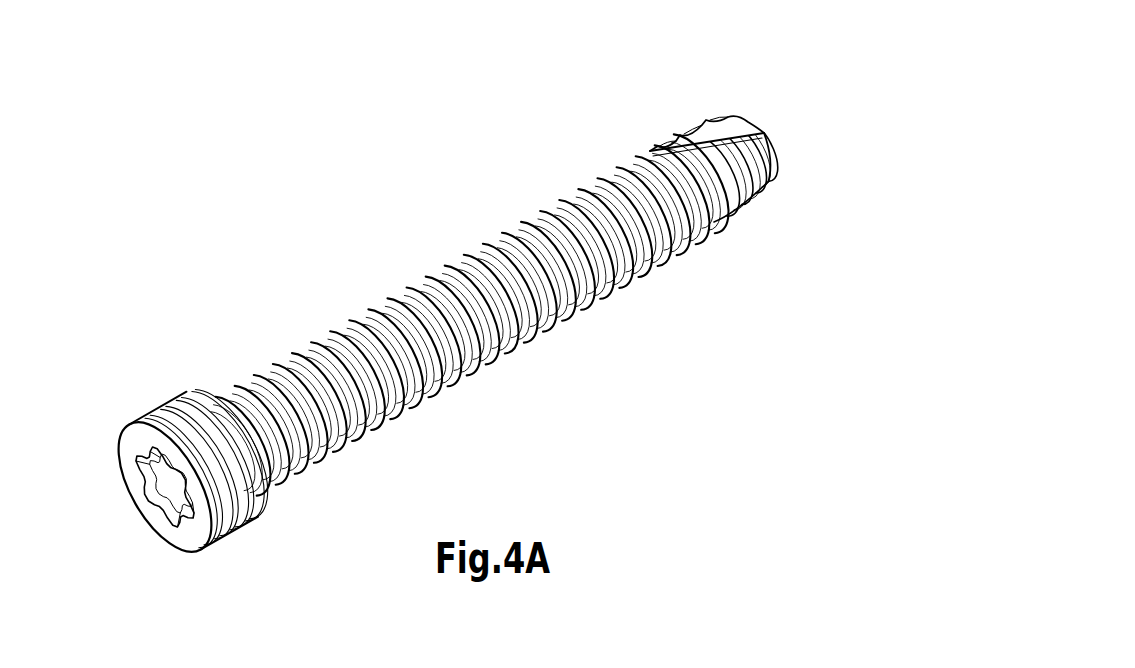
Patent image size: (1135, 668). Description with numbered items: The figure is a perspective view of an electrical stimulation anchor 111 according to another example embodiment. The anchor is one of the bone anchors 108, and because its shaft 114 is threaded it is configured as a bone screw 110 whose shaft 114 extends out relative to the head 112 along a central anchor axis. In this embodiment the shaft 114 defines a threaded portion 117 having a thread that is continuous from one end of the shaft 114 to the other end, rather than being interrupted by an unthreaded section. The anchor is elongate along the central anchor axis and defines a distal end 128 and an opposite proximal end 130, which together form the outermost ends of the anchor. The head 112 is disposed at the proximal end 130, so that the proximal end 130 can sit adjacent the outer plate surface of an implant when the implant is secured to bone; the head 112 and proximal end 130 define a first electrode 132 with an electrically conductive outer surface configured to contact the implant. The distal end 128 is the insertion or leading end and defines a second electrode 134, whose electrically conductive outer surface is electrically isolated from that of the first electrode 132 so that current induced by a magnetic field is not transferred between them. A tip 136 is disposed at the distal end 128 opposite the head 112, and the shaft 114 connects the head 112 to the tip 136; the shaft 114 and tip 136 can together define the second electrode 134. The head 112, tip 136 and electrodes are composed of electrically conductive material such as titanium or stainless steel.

The bone anchor 108 is at (463, 326).
The bone screw 110 is at (463, 326).
The electrical stimulation anchor 111 is at (385, 165).
The head 112 is at (170, 398).
The shaft 114 is at (477, 237).
The threaded portion 117 is at (410, 285).
The distal end 128 is at (772, 148).
The proximal end 130 is at (130, 465).
The first electrode 132 is at (233, 537).
The second electrode 134 is at (762, 200).
The tip 136 is at (758, 133).